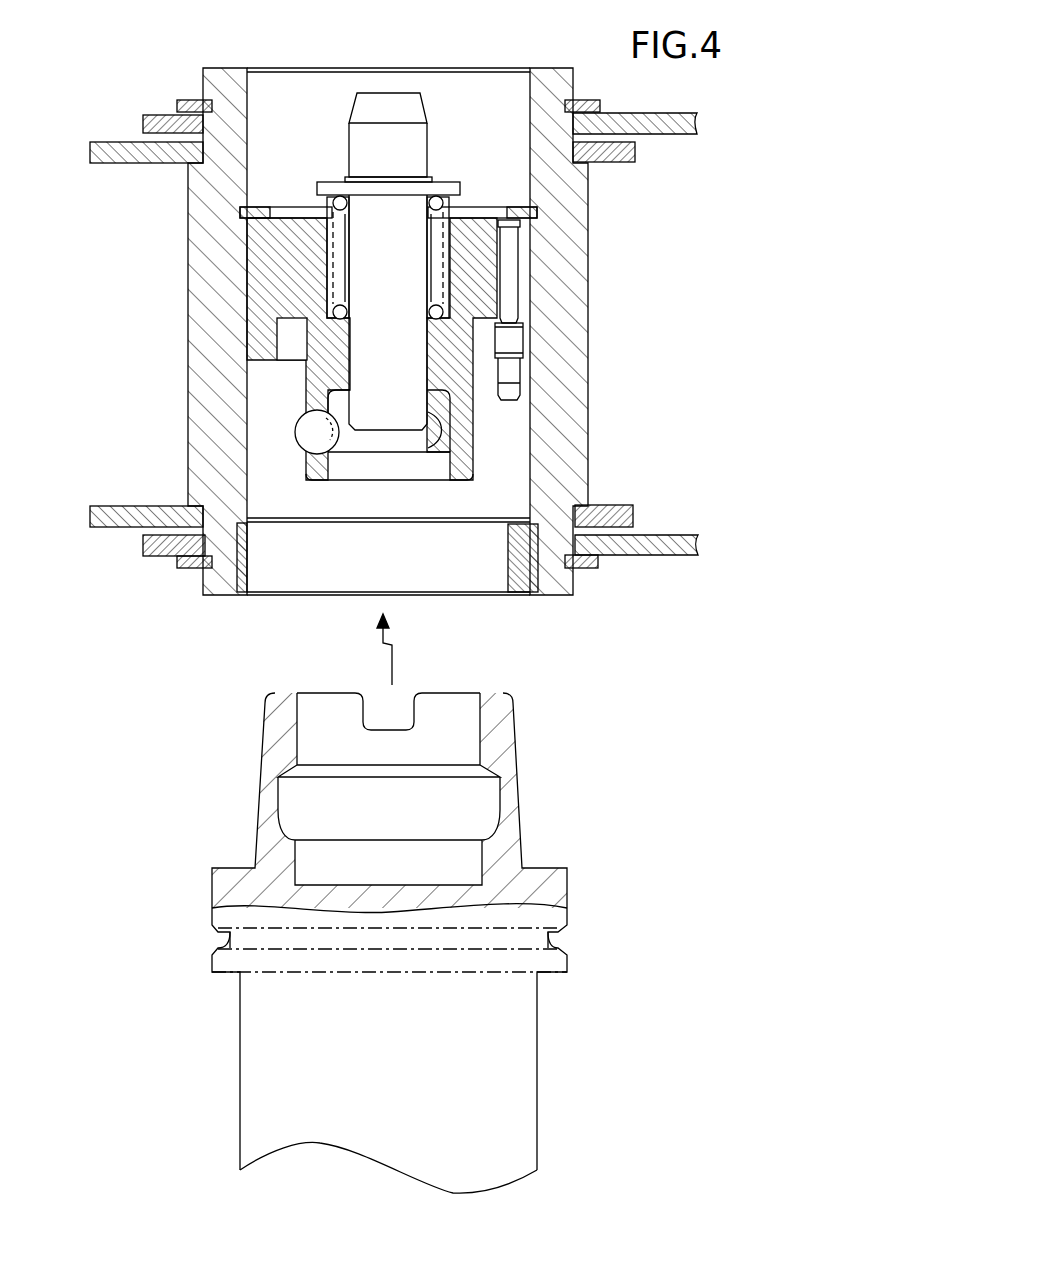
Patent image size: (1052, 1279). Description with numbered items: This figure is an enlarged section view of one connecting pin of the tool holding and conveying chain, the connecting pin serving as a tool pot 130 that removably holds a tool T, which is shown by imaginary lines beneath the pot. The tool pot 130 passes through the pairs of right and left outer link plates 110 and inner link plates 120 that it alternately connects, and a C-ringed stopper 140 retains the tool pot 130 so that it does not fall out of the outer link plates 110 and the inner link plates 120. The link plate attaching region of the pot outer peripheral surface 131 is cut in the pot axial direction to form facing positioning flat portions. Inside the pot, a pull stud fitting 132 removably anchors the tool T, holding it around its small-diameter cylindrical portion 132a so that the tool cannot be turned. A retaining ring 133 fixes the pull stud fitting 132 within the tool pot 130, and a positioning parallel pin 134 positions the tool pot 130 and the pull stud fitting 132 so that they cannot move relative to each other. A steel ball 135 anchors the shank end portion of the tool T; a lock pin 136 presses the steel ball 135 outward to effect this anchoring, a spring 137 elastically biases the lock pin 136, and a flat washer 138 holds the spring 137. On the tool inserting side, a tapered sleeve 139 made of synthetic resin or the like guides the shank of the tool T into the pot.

The outer link plate 110 is at (160, 120).
The inner link plate 120 is at (118, 148).
The connecting pin (tool pot) 130 is at (652, 473).
The pot outer peripheral surface 131 is at (590, 427).
The pull stud fitting 132 is at (487, 268).
The small-diameter cylindrical portion 132a is at (317, 382).
The retaining ring 133 is at (440, 219).
The positioning parallel pin 134 is at (510, 335).
The steel ball 135 is at (307, 432).
The lock pin 136 is at (422, 462).
The spring 137 is at (440, 245).
The flat washer 138 is at (445, 188).
The tapered sleeve 139 is at (533, 540).
The C-ringed stopper 140 is at (192, 100).
The tool T is at (520, 1040).